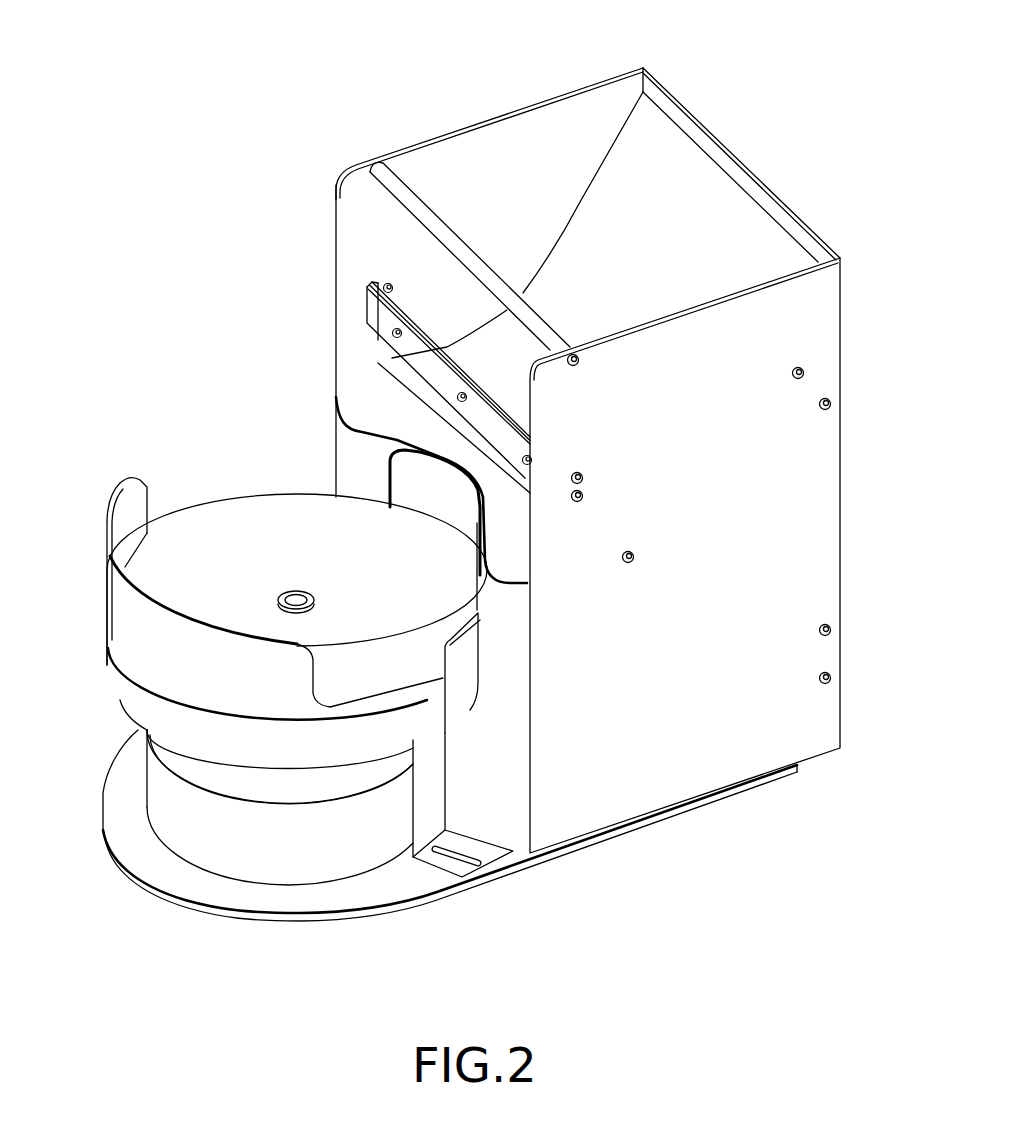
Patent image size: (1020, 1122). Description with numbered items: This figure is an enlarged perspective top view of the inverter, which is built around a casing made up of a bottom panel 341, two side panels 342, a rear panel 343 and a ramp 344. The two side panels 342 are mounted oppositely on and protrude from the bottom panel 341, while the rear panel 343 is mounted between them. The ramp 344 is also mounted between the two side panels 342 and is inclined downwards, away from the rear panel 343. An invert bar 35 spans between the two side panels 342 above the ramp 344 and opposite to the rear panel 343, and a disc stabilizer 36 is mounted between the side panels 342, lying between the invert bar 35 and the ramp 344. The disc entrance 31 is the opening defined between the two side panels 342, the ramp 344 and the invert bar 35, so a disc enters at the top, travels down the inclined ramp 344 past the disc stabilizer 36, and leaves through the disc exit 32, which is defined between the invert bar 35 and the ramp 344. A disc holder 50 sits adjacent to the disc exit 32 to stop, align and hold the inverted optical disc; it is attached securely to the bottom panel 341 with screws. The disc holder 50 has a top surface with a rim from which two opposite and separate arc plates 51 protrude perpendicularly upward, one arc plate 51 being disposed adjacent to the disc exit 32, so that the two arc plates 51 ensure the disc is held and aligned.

The disc entrance 31 is at (577, 118).
The disc exit 32 is at (387, 404).
The invert bar 35 is at (450, 238).
The disc stabilizer 36 is at (393, 357).
The disc holder 50 is at (258, 514).
The arc plates 51 is at (457, 517).
The bottom panel 341 is at (335, 897).
The side panels 342 is at (505, 148).
The rear panel 343 is at (790, 205).
The ramp 344 is at (710, 190).